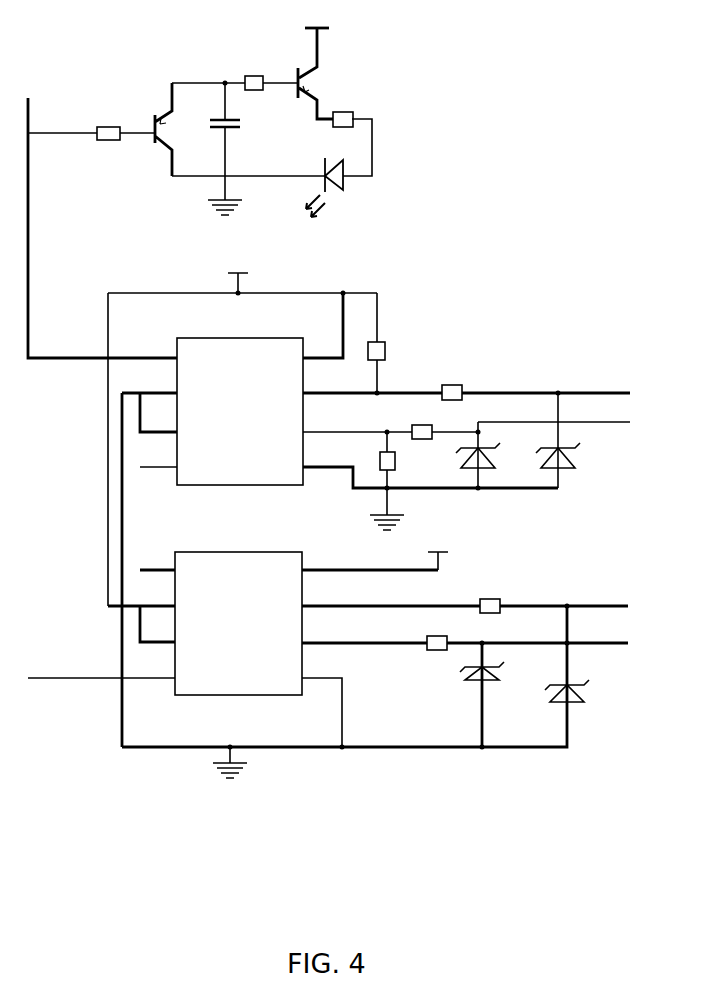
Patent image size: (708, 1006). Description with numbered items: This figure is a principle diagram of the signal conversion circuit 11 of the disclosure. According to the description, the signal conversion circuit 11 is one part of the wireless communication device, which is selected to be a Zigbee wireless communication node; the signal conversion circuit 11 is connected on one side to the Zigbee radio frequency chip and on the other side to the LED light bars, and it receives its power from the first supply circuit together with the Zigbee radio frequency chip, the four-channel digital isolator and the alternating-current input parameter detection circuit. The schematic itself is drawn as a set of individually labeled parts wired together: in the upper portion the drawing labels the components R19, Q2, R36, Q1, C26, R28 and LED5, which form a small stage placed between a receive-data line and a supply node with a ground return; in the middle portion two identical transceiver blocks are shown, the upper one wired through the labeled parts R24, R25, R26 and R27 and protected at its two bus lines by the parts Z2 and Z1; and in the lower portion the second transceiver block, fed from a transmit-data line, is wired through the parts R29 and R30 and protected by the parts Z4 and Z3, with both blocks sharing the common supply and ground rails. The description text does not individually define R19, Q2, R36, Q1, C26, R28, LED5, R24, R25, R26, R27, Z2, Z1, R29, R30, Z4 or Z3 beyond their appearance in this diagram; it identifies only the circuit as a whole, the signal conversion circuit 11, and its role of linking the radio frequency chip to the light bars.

The signal conversion circuit 11 is at (434, 258).
The resistor R19 is at (108, 127).
The transistor Q2 is at (171, 129).
The resistor R36 is at (254, 76).
The transistor Q1 is at (318, 93).
The capacitor C26 is at (234, 132).
The resistor R28 is at (342, 129).
The light emitting diode LED5 is at (336, 188).
The resistor R24 is at (389, 352).
The resistor R25 is at (451, 385).
The resistor R26 is at (421, 424).
The resistor R27 is at (400, 461).
The zener diode Z2 is at (479, 465).
The zener diode Z1 is at (558, 465).
The resistor R29 is at (490, 598).
The resistor R30 is at (437, 636).
The zener diode Z4 is at (482, 680).
The zener diode Z3 is at (567, 699).